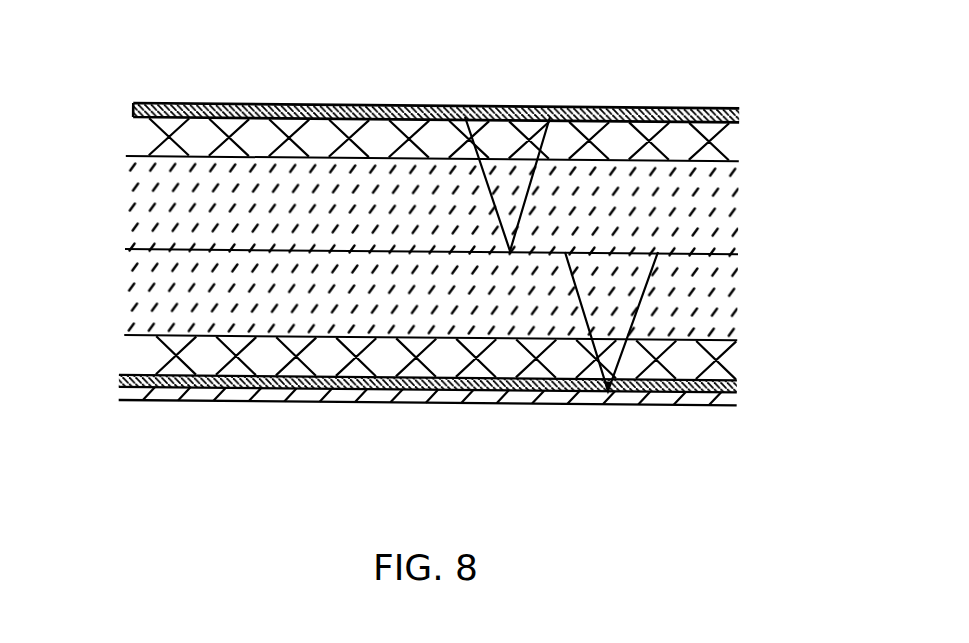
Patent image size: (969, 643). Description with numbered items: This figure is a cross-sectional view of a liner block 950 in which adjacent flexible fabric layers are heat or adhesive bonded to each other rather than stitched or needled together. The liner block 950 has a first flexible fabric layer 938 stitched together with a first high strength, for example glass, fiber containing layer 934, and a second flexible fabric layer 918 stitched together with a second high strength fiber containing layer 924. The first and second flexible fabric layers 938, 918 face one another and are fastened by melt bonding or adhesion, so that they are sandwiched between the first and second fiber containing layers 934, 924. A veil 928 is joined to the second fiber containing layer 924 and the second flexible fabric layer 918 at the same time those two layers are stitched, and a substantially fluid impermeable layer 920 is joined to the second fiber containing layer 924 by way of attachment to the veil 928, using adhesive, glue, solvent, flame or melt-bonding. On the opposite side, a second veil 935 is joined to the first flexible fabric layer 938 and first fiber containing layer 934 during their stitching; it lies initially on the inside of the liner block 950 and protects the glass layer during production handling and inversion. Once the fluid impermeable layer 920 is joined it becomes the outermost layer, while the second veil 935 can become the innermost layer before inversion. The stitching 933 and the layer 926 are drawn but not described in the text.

The liner block 950 is at (690, 424).
The second veil layer 935 is at (748, 114).
The first high strength fiber containing layer 934 is at (733, 145).
The first flexible fabric layer 938 is at (157, 207).
The second flexible fabric layer 918 is at (725, 295).
The second high strength fiber containing layer 924 is at (725, 366).
The veil 928 is at (137, 388).
The backing layer 926 is at (717, 393).
The substantially fluid impermeable layer 920 is at (311, 398).
The stitching thread 933 is at (475, 180).